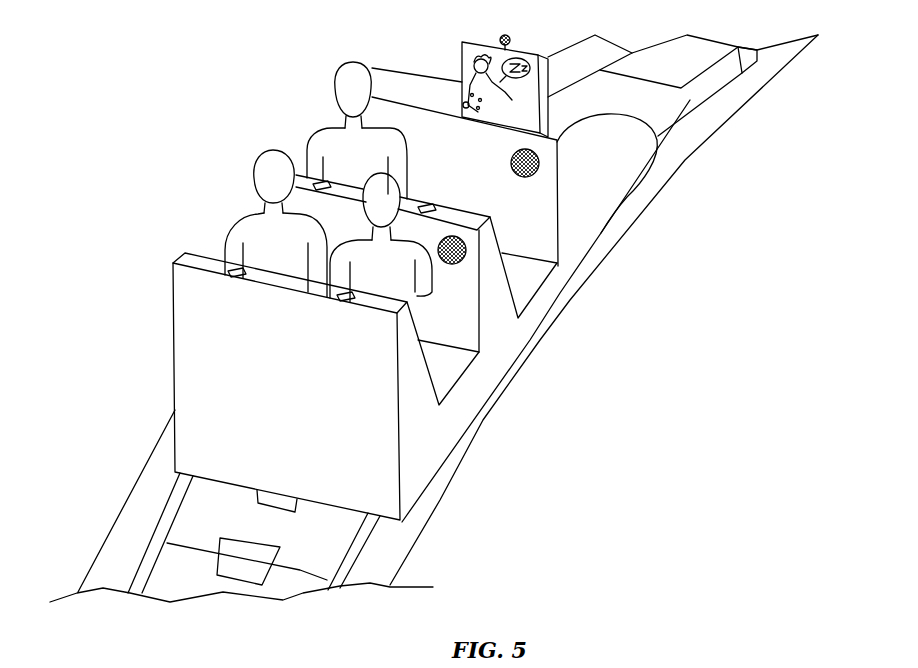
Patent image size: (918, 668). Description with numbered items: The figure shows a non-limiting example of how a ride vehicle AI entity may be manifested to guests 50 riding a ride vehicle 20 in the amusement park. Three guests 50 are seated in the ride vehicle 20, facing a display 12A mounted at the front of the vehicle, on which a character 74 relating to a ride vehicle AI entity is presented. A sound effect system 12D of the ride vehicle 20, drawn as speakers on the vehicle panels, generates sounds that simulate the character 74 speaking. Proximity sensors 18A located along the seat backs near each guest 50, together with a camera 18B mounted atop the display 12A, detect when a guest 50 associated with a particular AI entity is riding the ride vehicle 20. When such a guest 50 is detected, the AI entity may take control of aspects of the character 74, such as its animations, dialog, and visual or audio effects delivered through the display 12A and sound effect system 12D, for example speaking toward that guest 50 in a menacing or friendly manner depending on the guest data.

The ride vehicle 20 is at (428, 437).
The guest 50 is at (352, 58).
The proximity sensor 18A is at (314, 175).
The sound effect system 12D is at (468, 253).
The display 12A is at (491, 43).
The character 74 is at (462, 58).
The camera 18B is at (510, 36).